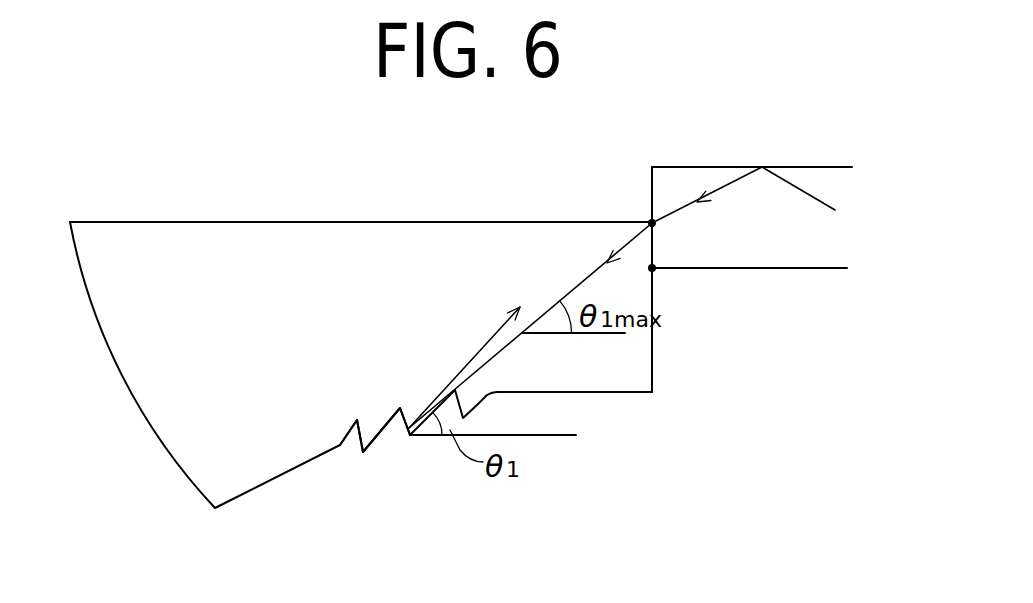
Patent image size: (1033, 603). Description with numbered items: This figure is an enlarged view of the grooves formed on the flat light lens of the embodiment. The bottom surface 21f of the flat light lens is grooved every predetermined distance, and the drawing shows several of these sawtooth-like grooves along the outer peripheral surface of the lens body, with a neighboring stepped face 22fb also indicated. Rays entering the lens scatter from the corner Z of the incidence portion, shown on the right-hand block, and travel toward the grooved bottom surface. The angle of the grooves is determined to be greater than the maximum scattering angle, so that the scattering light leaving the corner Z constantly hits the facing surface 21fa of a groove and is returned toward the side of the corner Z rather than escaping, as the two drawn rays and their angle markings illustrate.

The bottom surface 21f is at (430, 332).
The step face of lens surface 22fb is at (396, 412).
The facing surface 21fa is at (370, 417).
The corner of the incidence portion Z is at (747, 255).